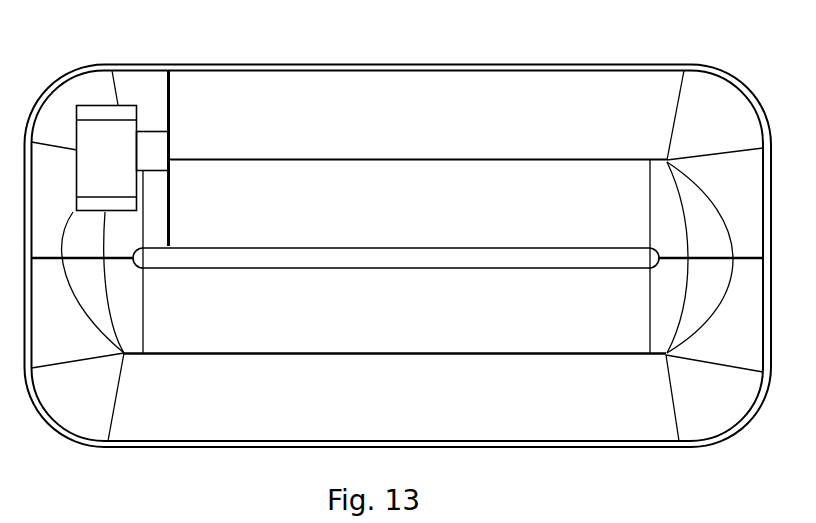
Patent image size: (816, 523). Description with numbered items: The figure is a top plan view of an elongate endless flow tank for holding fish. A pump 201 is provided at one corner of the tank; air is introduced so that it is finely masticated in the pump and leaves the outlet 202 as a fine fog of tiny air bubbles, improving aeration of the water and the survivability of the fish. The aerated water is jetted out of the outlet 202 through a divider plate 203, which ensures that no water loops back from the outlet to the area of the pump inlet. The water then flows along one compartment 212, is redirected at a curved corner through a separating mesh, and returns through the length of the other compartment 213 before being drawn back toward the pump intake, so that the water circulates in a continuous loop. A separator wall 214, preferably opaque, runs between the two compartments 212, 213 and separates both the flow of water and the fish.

The pump 201 is at (123, 150).
The outlet 202 is at (149, 153).
The divider plate 203 is at (170, 148).
The compartment 212 is at (411, 200).
The compartment 213 is at (528, 325).
The separator wall 214 is at (487, 258).